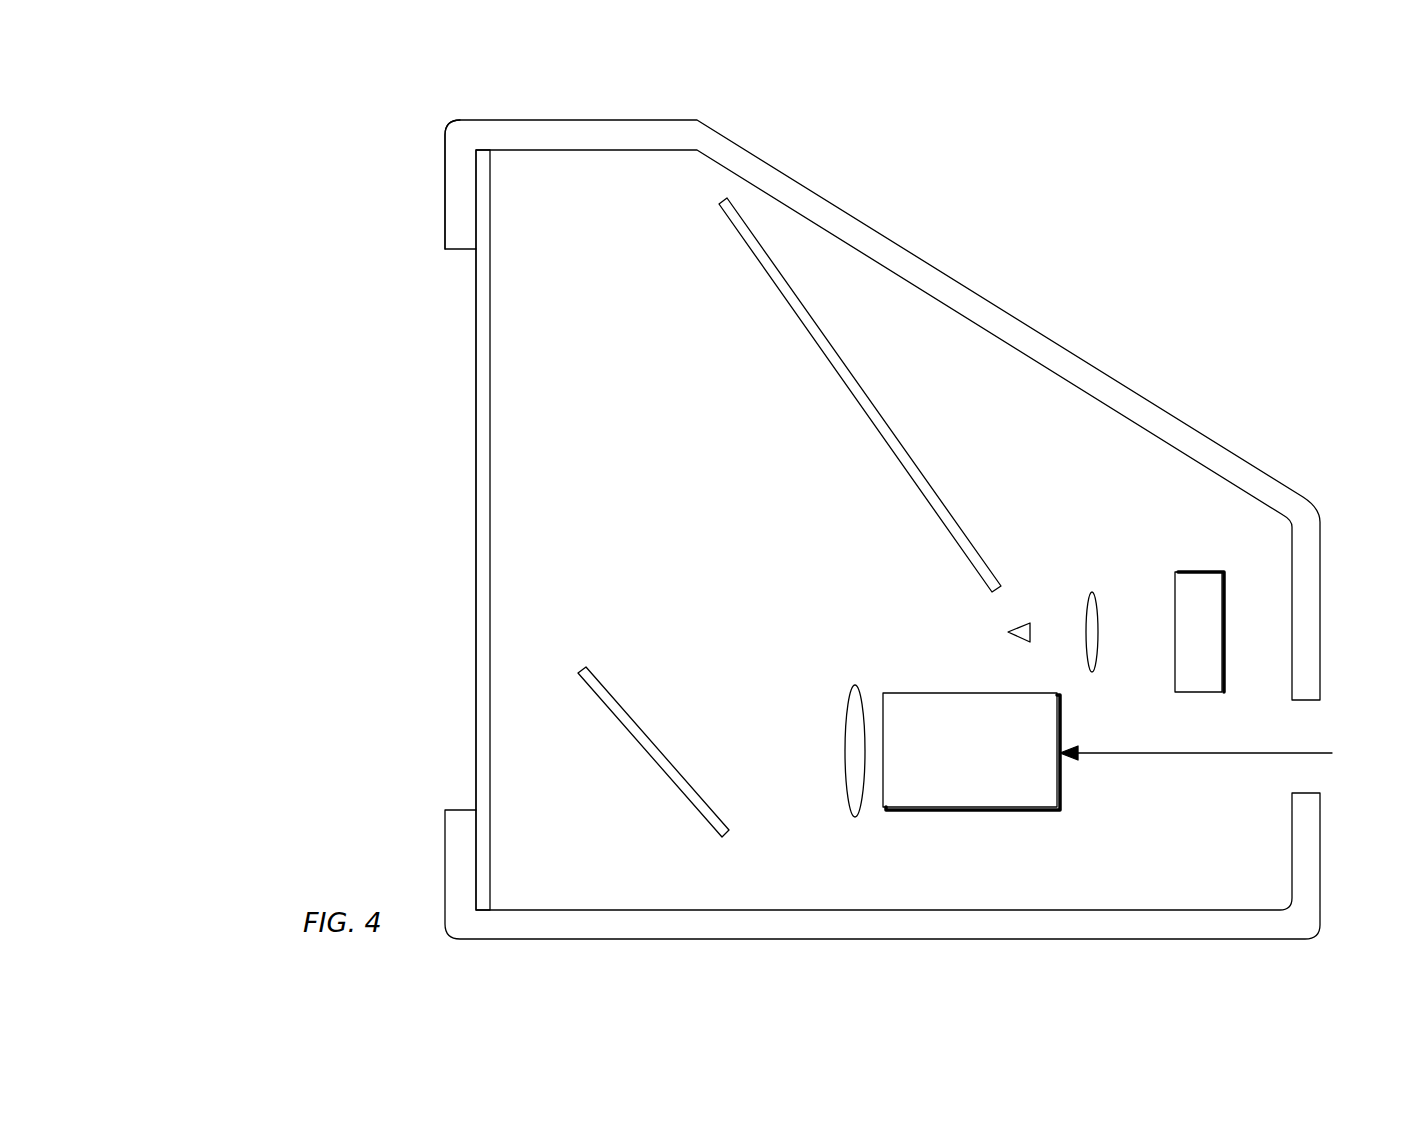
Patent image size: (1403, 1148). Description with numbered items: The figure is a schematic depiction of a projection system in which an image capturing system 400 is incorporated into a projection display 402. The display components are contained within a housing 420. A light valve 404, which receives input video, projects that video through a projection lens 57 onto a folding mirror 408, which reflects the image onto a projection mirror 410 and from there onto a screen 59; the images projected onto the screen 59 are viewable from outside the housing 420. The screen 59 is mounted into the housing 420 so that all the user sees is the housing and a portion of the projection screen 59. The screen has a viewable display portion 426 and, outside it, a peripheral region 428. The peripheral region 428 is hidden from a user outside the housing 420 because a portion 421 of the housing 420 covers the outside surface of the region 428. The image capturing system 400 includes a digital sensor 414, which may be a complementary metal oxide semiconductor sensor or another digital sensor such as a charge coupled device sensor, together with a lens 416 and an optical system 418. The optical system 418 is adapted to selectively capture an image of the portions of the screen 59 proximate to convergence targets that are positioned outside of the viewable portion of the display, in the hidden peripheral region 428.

The projection display 402 is at (1108, 304).
The housing 420 is at (1011, 314).
The portion of the housing 421 is at (445, 199).
The viewable display portion 426 is at (477, 530).
The peripheral region 428 is at (490, 293).
The screen 59 is at (452, 585).
The projection mirror 410 is at (863, 393).
The folding mirror 408 is at (694, 791).
The image capturing system 400 is at (1096, 518).
The projection lens 57 is at (853, 686).
The light valve 404 is at (928, 692).
The optical system 418 is at (1020, 621).
The lens 416 is at (1093, 593).
The digital sensor 414 is at (1203, 569).